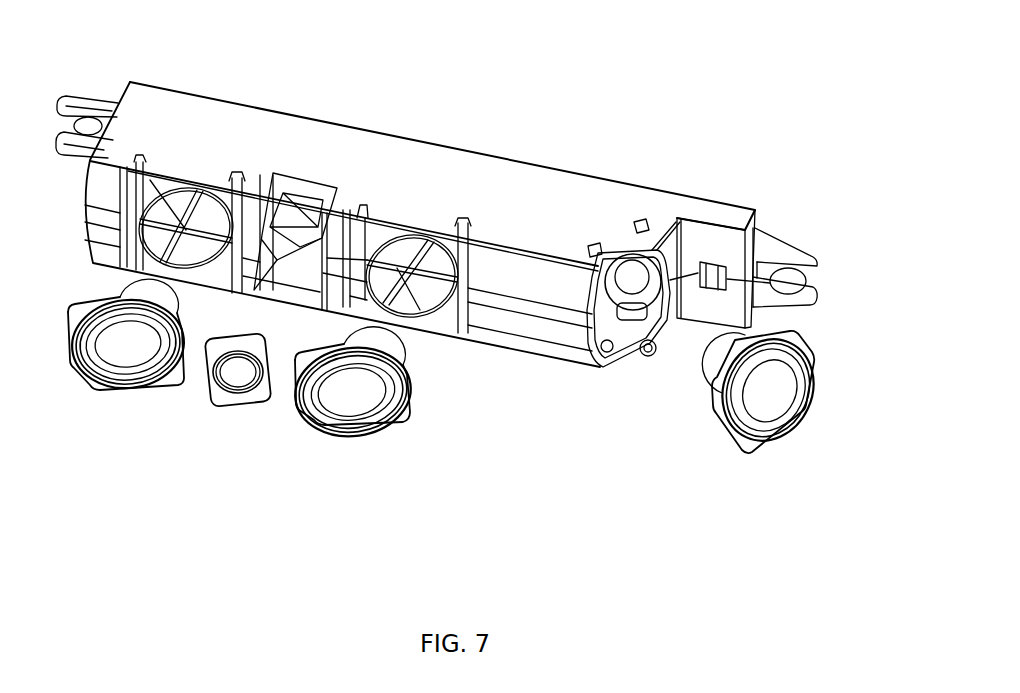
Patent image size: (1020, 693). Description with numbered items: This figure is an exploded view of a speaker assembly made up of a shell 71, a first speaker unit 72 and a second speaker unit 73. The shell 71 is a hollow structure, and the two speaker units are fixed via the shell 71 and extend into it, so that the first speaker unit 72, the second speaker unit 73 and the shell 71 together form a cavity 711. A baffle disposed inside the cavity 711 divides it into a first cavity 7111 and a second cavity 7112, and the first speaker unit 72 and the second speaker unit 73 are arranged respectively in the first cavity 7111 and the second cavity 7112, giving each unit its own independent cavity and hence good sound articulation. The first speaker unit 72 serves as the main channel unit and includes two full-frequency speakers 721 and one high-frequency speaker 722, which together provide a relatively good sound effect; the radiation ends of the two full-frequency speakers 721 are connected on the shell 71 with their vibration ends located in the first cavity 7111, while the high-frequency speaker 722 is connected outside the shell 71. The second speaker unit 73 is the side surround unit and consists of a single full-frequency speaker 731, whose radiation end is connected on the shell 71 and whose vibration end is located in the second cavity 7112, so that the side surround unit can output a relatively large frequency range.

The shell 71 is at (184, 127).
The cavity 711 is at (655, 64).
The first cavity 7111 is at (196, 218).
The second cavity 7112 is at (597, 253).
The first speaker unit 72 is at (350, 519).
The full-frequency speaker 721 is at (128, 362).
The high-frequency speaker 722 is at (242, 377).
The second speaker unit 73 is at (772, 397).
The full-frequency speaker 731 is at (768, 389).